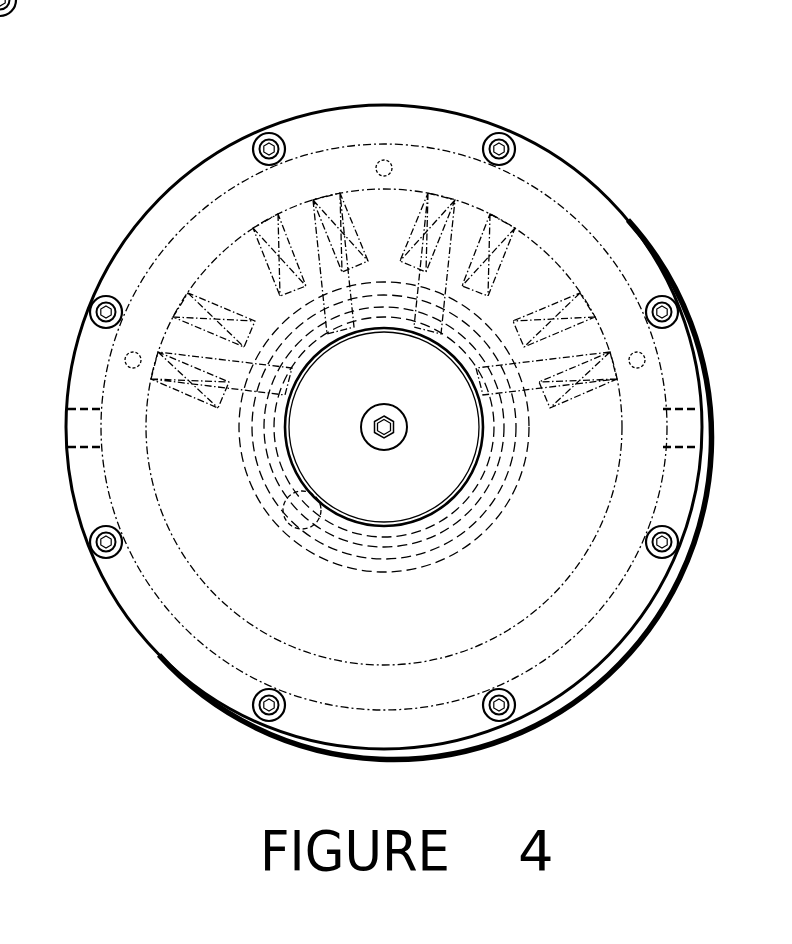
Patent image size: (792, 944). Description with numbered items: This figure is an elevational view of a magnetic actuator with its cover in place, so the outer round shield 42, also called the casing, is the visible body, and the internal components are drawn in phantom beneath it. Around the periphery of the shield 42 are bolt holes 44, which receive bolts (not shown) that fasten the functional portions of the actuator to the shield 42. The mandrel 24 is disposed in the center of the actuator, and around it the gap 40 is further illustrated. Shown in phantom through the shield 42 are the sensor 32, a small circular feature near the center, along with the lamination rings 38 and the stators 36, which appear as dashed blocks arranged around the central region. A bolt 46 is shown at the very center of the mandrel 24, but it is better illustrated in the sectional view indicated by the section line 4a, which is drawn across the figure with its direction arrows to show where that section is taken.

The section line 4a- 4a is at (224, 374).
The mandrel 24 is at (397, 503).
The sensor 32 is at (290, 512).
The stators 36 is at (548, 232).
The lamination rings 38 is at (582, 307).
The gap 40 is at (472, 478).
The shield 42 is at (680, 378).
The bolt holes 44 is at (278, 722).
The bolt 46 is at (367, 413).